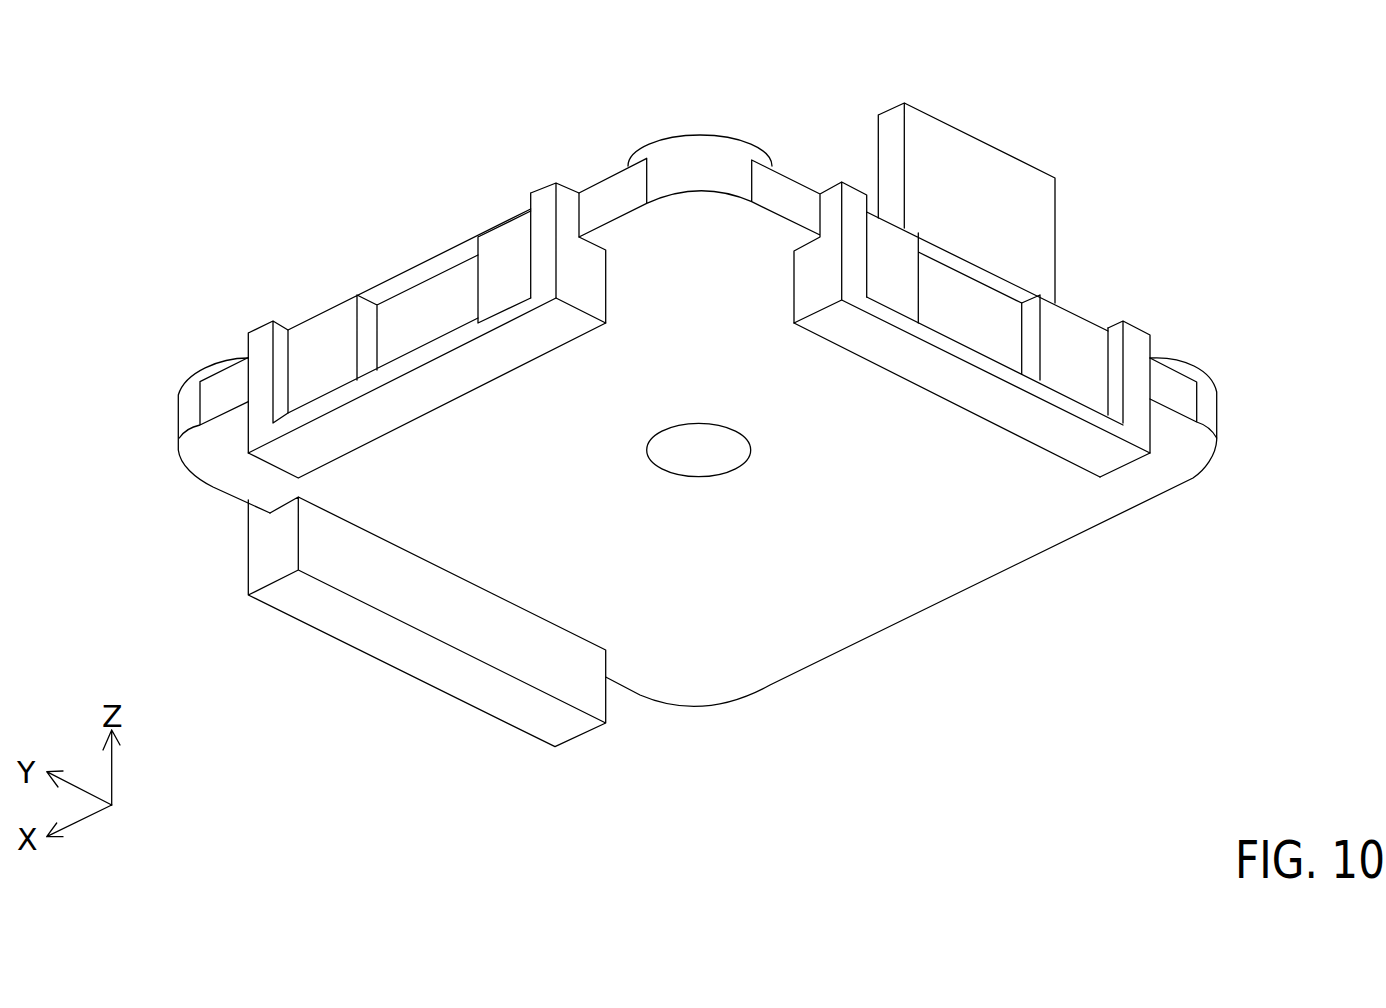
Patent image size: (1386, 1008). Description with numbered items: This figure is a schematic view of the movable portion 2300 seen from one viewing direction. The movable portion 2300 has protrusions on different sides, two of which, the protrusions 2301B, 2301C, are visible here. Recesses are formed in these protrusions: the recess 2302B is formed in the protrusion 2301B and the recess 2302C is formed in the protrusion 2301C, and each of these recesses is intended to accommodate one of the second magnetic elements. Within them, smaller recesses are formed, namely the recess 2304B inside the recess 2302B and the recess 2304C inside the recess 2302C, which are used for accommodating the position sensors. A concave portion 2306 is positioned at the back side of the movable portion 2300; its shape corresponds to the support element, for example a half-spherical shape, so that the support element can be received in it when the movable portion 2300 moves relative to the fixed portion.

The movable portion 2300 is at (215, 84).
The protrusion 2301B is at (545, 210).
The recess 2302B is at (505, 250).
The recess 2304B is at (425, 310).
The recess 2304C is at (977, 318).
The recess 2302C is at (1082, 355).
The protrusion 2301C is at (1137, 348).
The concave portion 2306 is at (713, 455).